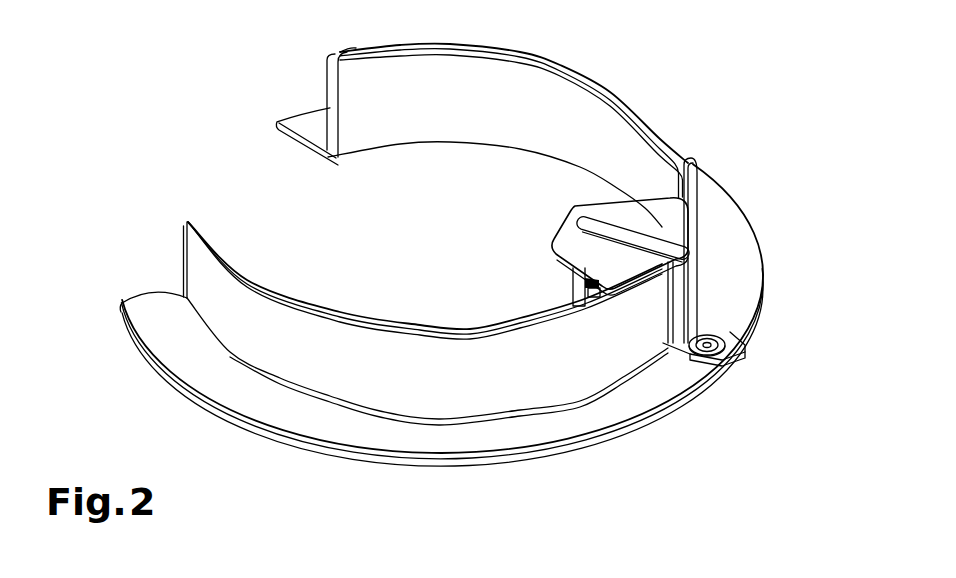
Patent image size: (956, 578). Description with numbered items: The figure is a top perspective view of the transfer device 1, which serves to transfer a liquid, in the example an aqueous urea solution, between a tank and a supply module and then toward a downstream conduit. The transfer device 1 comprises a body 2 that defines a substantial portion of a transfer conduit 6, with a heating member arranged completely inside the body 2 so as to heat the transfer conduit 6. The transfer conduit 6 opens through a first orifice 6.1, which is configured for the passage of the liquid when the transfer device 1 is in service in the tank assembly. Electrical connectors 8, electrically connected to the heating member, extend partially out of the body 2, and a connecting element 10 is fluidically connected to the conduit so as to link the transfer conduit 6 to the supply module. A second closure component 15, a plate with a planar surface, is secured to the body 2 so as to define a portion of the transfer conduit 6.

The transfer device 1 is at (256, 452).
The body 2 is at (385, 368).
The transfer conduit 6 is at (692, 266).
The first orifice 6.1 is at (711, 336).
The electrical connectors 8 is at (573, 283).
The connecting element 10 is at (593, 292).
The second closure component 15 is at (646, 242).